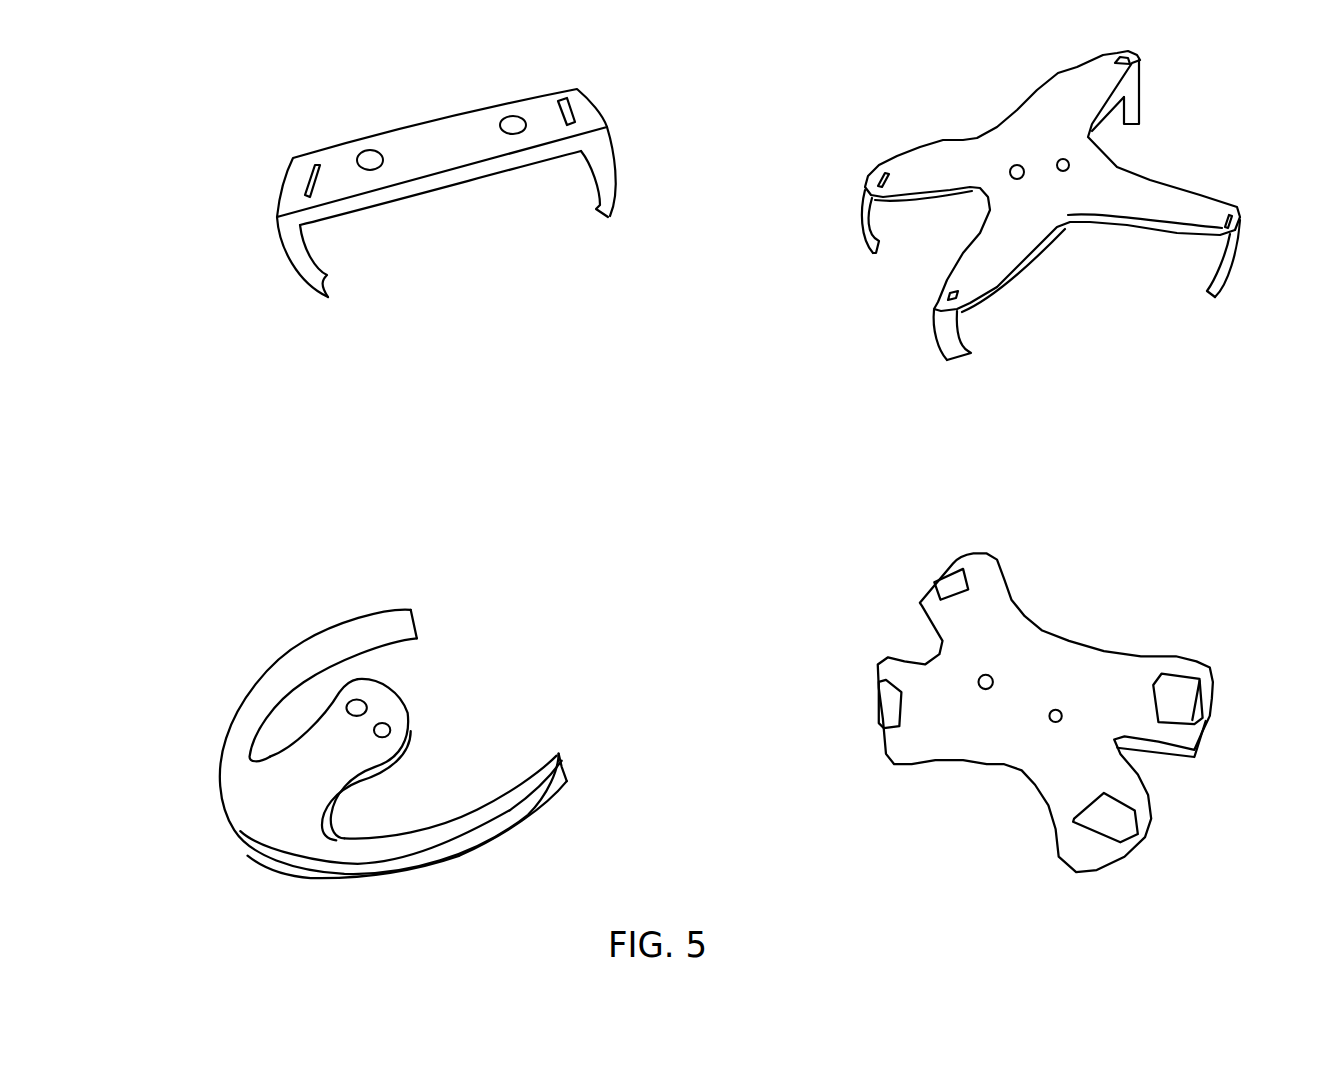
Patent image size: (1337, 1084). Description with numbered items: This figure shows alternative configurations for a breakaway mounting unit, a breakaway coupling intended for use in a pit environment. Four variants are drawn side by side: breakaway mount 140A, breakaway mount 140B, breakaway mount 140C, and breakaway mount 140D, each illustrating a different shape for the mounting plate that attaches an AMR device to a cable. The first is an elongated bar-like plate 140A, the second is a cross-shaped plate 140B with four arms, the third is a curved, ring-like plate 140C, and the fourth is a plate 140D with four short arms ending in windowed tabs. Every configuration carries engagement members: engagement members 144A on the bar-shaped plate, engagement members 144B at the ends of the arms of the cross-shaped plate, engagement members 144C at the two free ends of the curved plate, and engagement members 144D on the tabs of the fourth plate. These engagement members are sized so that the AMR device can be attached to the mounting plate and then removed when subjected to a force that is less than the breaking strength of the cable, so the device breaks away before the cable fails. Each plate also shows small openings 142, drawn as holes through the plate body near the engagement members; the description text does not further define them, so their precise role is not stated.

The hole 142 is at (370, 150).
The breakaway mount 140A is at (495, 196).
The engagement members 144A is at (335, 270).
The breakaway mount 140B is at (1062, 205).
The engagement members 144B is at (863, 248).
The breakaway mount 140C is at (391, 728).
The engagement members 144C is at (403, 620).
The breakaway mount 140D is at (1094, 719).
The engagement members 144D is at (937, 560).